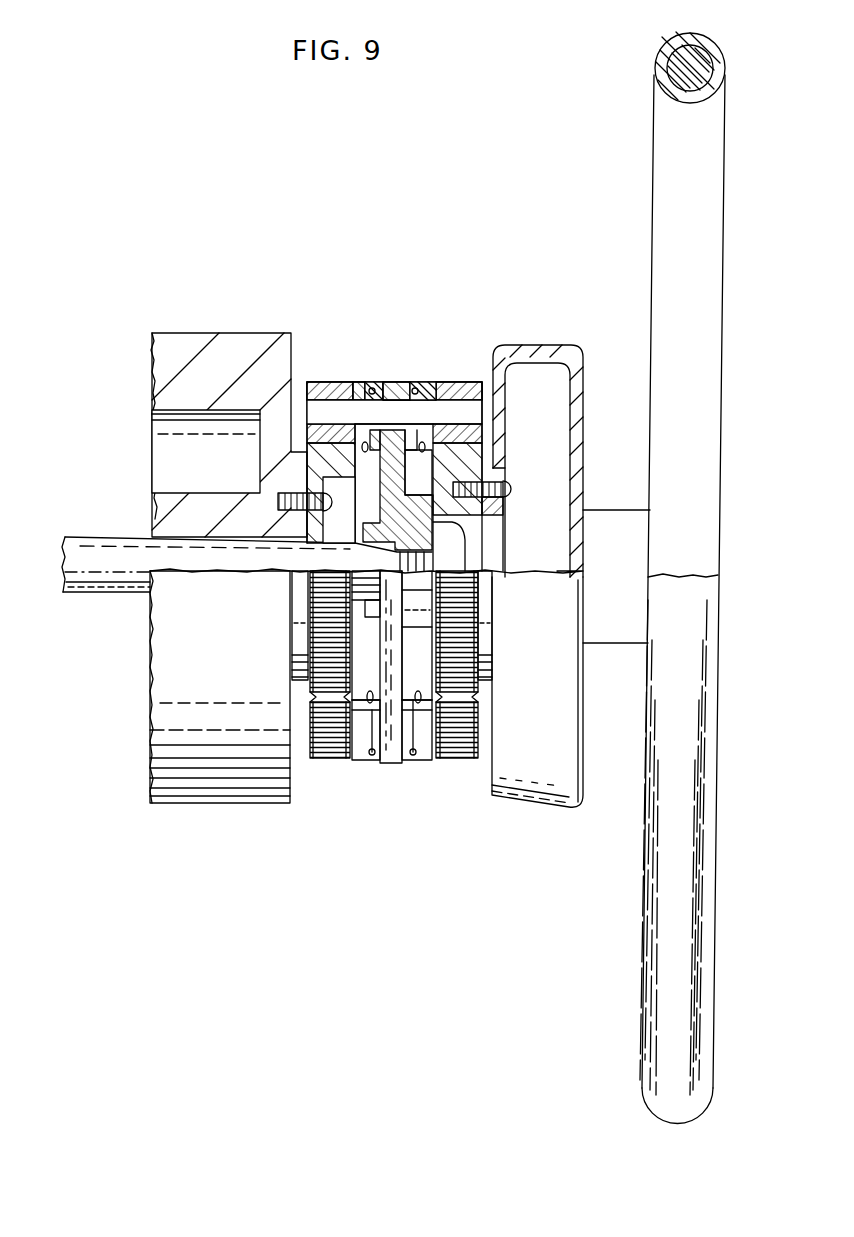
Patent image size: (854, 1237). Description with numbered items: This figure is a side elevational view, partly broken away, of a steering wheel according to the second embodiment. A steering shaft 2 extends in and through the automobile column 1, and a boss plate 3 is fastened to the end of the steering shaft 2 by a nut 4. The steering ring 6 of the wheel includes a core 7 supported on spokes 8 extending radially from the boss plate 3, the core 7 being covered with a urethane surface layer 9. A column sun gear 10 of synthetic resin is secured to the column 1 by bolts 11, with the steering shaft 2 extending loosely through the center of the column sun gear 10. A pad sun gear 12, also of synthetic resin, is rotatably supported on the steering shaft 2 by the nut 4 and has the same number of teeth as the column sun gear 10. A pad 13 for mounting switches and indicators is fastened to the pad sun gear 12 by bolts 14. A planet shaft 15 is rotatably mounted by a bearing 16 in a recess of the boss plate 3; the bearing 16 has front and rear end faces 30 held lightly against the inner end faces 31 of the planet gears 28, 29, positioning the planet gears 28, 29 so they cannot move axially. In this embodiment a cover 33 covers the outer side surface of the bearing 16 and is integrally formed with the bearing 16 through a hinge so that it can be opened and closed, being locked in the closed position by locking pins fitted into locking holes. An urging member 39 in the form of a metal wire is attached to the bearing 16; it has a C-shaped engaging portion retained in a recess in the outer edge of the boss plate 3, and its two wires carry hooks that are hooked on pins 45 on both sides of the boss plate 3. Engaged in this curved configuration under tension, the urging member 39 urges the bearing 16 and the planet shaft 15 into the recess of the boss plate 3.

The column 1 is at (216, 334).
The steering shaft 2 is at (117, 537).
The boss plate 3 is at (388, 764).
The nut 4 is at (470, 565).
The steering ring 6 is at (714, 564).
The core 7 is at (700, 81).
The spoke 8 is at (614, 521).
The urethane surface layer 9 is at (660, 78).
The column sun gear 10 is at (304, 612).
The bolt 11 is at (332, 512).
The pad sun gear 12 is at (484, 630).
The pad 13 is at (580, 694).
The bolt 14 is at (510, 490).
The planet shaft 15 is at (398, 412).
The bearing 16 is at (375, 391).
The planet gear 28 is at (307, 385).
The planet gear 29 is at (456, 386).
The end face 30 is at (338, 385).
The inner end face 31 is at (358, 389).
The cover 33 is at (427, 437).
The urging member 39 is at (371, 450).
The pin 45 is at (416, 690).